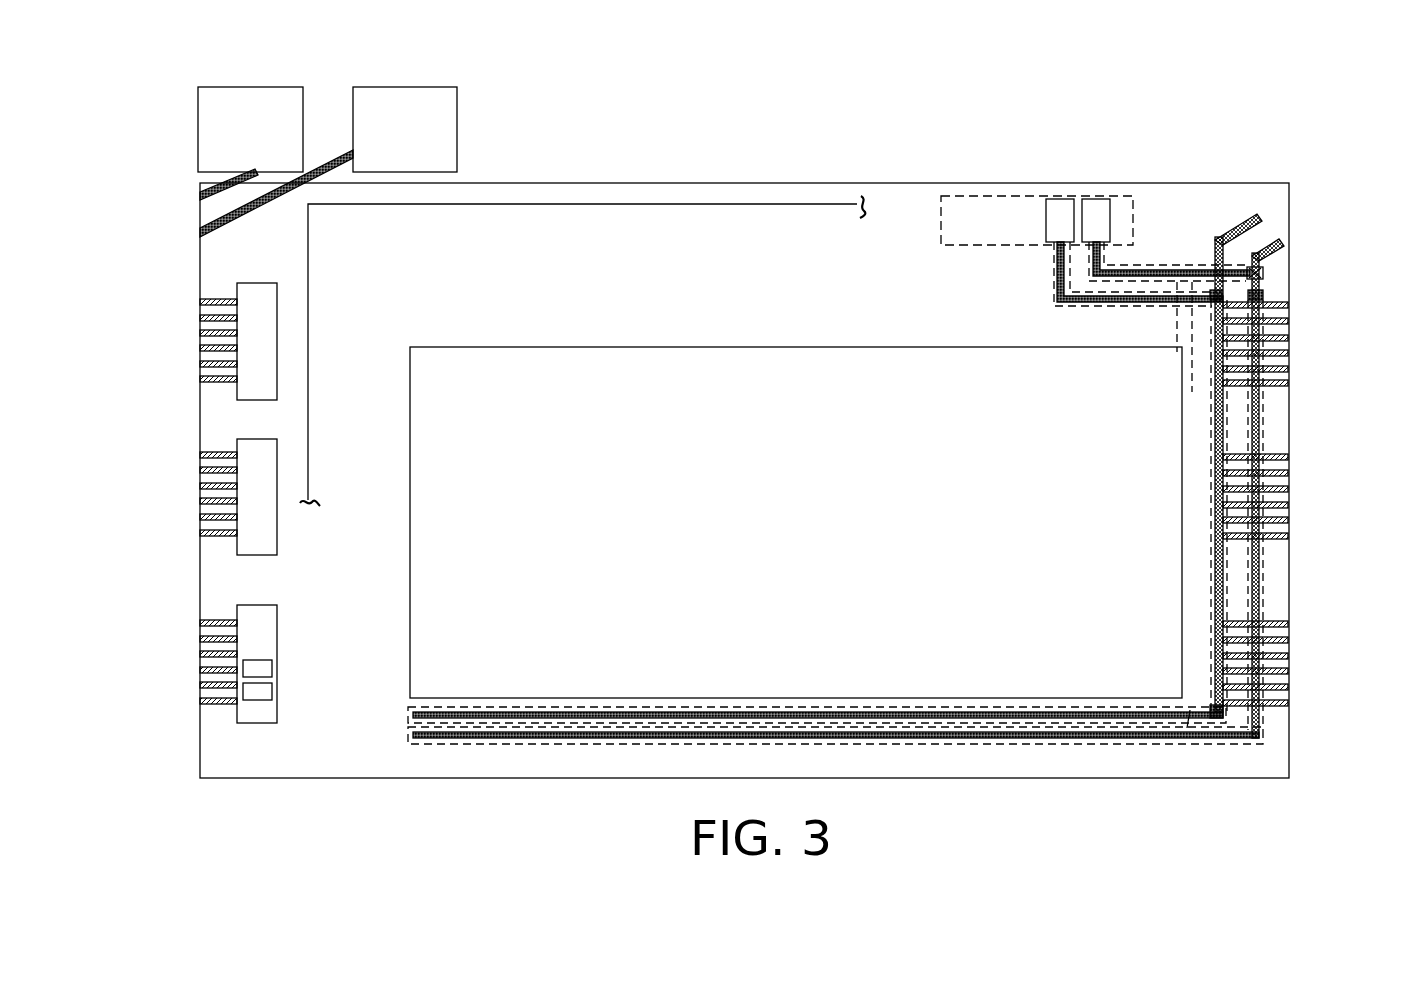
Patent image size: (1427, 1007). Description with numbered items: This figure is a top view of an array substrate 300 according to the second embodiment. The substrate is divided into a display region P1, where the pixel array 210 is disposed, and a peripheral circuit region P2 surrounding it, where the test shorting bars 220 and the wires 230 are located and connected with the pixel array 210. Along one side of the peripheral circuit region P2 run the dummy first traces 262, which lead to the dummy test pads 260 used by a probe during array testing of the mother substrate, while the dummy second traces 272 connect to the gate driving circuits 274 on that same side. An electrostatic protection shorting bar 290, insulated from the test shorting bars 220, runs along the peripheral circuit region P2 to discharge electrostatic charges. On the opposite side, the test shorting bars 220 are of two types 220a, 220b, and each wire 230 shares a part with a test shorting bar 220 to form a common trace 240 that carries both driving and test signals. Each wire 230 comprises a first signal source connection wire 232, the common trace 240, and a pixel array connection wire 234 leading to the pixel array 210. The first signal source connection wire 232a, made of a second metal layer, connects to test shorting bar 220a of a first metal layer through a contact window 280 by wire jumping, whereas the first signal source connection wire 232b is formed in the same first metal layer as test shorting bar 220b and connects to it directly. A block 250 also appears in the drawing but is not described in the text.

The array substrate 300 is at (1411, 843).
The pixel array 210 is at (512, 662).
The electrostatic protection shorting bar 290 is at (696, 204).
The dummy test pads 260 is at (430, 98).
The dummy first traces 262 is at (213, 222).
The dummy second traces 272 is at (200, 657).
The gate driving circuits 274 is at (248, 293).
The sensing circuit / controller 250 is at (1096, 200).
The wires 230 is at (848, 493).
The first signal source connection wires 232 is at (1151, 330).
The first signal source connection wire 232a is at (1177, 352).
The first signal source connection wire 232b is at (1190, 392).
The common trace 240 is at (1212, 510).
The pixel array connection wires 234 is at (835, 679).
The test shorting bars 220 is at (1316, 436).
The test shorting bar 220a is at (1280, 248).
The test shorting bar 220b is at (1260, 218).
The contact window 280 is at (1260, 274).
The display region P1 is at (424, 654).
The peripheral circuit region P2 is at (897, 217).